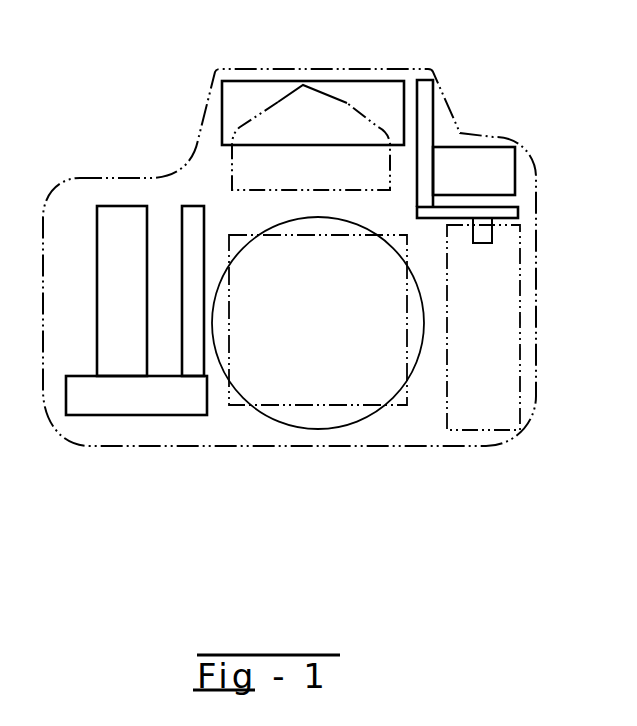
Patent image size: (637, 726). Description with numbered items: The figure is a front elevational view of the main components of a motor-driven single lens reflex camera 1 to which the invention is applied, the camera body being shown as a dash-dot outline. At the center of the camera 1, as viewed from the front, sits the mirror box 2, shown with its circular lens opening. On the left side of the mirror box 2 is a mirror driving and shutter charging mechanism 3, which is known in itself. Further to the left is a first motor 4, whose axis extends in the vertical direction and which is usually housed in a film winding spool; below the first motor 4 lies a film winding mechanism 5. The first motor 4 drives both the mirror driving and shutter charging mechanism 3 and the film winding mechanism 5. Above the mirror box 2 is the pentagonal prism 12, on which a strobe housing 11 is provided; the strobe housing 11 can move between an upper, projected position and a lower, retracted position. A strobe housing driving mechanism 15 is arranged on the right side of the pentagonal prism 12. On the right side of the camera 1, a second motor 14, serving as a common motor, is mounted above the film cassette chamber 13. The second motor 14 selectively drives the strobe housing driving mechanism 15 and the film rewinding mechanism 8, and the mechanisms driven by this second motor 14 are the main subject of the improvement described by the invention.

The camera body 1 is at (198, 140).
The mirror box 2 is at (340, 405).
The mirror driving and shutter charging mechanism 3 is at (184, 212).
The first motor 4 is at (107, 307).
The film winding mechanism 5 is at (136, 405).
The film rewinding mechanism 8 is at (514, 212).
The strobe housing 11 is at (375, 80).
The pentagonal prism 12 is at (286, 92).
The film cassette chamber 13 is at (510, 360).
The second motor 14 is at (502, 165).
The strobe housing driving mechanism 15 is at (427, 103).